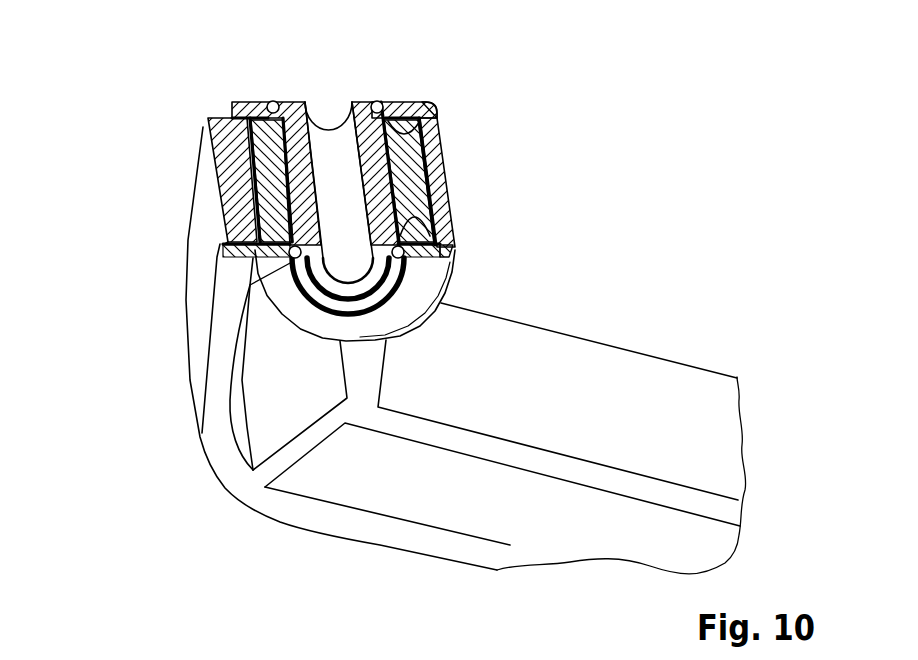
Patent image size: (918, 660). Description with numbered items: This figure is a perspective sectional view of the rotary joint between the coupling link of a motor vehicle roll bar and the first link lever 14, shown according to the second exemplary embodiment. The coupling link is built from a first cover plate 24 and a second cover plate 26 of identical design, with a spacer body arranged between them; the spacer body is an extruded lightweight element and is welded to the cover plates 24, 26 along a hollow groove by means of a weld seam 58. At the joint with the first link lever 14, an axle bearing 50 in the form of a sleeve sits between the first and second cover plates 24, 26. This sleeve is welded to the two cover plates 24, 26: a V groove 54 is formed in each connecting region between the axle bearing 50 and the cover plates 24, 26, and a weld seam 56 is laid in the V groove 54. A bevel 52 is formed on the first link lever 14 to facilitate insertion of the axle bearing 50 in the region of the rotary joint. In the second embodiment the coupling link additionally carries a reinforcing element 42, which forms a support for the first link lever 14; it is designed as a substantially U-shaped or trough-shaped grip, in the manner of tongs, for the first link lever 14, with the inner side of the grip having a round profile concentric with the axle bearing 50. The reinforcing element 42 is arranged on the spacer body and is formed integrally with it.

The first link lever 14 is at (210, 438).
The first cover plate 24 is at (248, 110).
The second cover plate 26 is at (423, 273).
The reinforcing element 42 is at (220, 162).
The axle bearing 50 is at (362, 107).
The bevel 52 is at (390, 120).
The V groove 54 is at (377, 100).
The weld seam 56 is at (380, 107).
The weld seam 58 is at (427, 110).